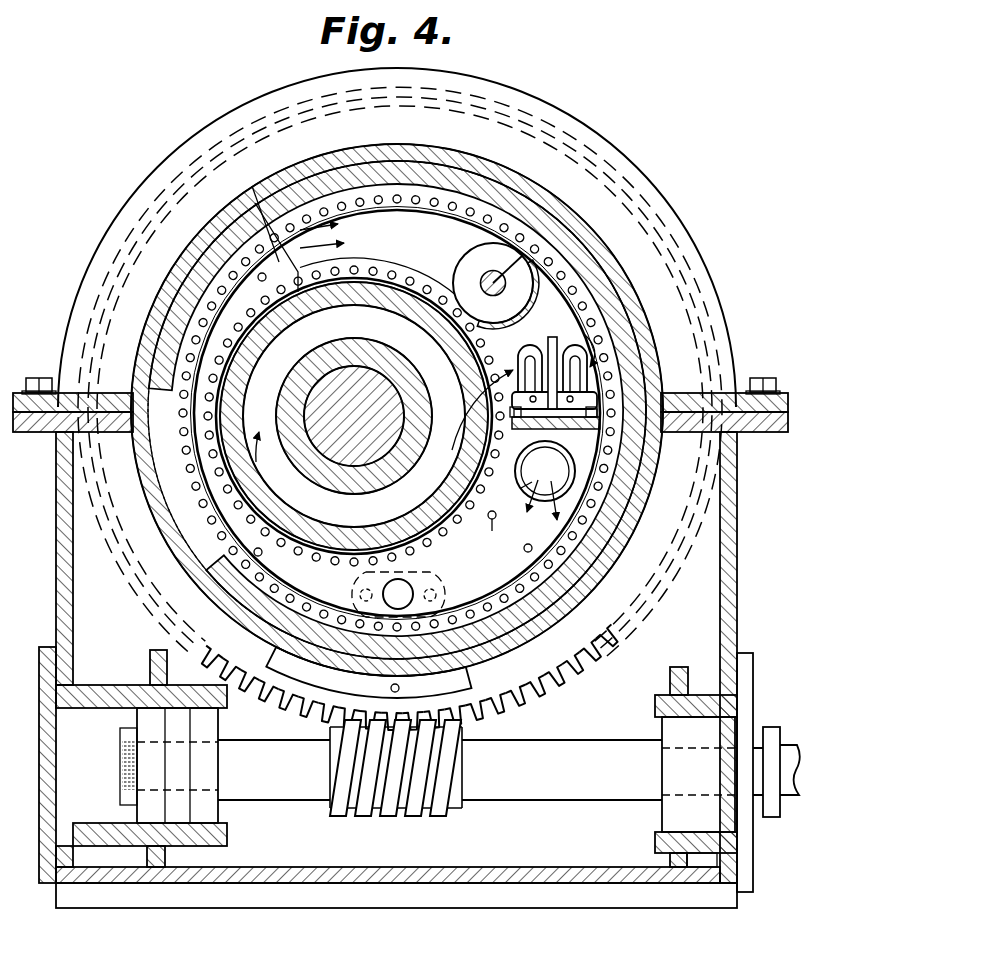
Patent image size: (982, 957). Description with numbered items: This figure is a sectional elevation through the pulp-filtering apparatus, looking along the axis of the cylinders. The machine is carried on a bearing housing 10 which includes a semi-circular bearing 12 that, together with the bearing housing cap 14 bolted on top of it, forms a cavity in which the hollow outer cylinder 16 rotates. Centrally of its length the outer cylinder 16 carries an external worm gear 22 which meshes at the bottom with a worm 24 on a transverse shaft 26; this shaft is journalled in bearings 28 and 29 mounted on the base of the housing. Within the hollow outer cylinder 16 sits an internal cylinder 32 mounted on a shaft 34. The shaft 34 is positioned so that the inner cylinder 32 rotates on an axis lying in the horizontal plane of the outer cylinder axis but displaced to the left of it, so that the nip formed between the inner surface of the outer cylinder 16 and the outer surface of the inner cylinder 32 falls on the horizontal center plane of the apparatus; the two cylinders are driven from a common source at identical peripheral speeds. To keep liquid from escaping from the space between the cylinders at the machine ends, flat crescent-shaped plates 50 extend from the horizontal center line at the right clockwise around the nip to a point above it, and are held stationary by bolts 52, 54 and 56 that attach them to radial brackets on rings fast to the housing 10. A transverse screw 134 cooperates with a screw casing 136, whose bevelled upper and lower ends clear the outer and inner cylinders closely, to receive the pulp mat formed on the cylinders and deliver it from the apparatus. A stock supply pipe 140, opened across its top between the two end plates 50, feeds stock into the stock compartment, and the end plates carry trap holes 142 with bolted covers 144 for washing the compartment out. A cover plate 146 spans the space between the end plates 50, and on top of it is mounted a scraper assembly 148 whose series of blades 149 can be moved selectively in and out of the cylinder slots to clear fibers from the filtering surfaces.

The bearing housing 10 is at (740, 574).
The semi-circular bearing 12 is at (622, 548).
The bearing housing cap 14 is at (716, 284).
The outer cylinder 16 is at (470, 188).
The external worm gear 22 is at (572, 672).
The worm 24 is at (412, 812).
The transverse shaft 26 is at (580, 788).
The bearing 28 is at (226, 838).
The bearing 29 is at (660, 838).
The internal cylinder 32 is at (358, 292).
The shaft 34 is at (372, 390).
The crescent-shaped plates 50 is at (267, 230).
The bolt 52 is at (524, 548).
The bolt 54 is at (262, 557).
The bolt 56 is at (265, 281).
The screw 134 is at (458, 270).
The screw casing 136 is at (537, 303).
The stock supply pipe 140 is at (545, 480).
The trap holes 142 is at (412, 586).
The bolted covers 144 is at (444, 602).
The cover plate 146 is at (511, 491).
The scraper assembly 148 is at (546, 341).
The blades 149 is at (509, 392).